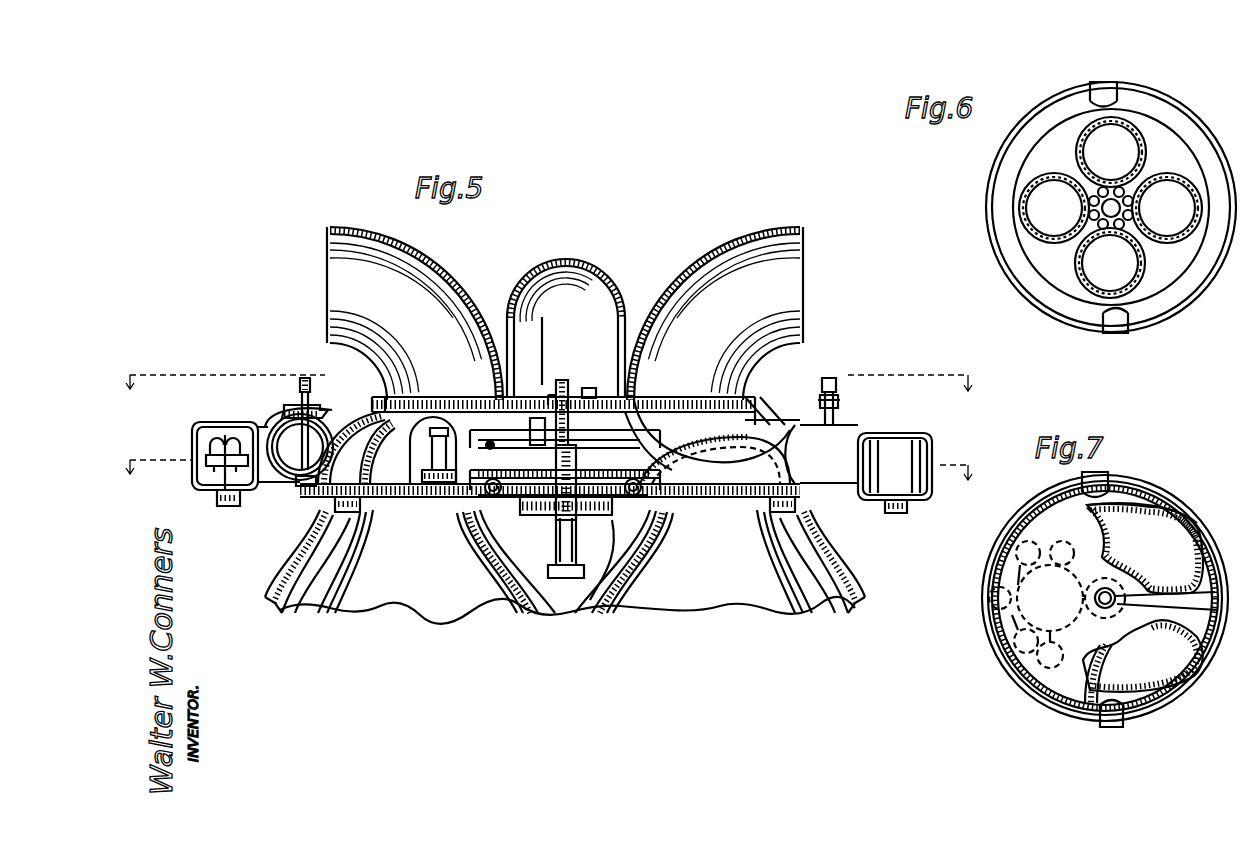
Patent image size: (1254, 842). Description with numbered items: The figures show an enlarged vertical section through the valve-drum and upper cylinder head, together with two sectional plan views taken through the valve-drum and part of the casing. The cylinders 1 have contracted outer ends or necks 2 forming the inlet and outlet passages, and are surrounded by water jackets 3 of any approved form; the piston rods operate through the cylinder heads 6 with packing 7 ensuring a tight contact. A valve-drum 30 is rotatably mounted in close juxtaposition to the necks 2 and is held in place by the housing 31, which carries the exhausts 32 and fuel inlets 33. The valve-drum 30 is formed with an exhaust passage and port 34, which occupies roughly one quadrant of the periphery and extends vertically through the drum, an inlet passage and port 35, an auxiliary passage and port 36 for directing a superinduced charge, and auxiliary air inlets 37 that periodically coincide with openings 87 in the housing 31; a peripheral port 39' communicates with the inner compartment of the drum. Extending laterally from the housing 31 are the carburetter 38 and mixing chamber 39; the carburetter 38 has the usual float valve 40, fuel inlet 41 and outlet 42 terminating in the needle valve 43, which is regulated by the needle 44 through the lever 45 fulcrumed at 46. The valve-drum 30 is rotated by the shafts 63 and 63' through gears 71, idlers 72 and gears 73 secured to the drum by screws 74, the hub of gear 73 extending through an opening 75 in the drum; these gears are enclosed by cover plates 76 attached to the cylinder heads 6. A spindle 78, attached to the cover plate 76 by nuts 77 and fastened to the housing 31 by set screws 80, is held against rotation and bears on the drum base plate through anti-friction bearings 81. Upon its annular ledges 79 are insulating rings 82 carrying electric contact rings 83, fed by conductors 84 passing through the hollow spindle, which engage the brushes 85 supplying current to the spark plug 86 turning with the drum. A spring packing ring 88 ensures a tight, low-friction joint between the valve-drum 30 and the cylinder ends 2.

In FIG. 5, the cylinders 1 is at (562, 616).
In FIG. 5, the contracted ends or necks 2 is at (565, 561).
In FIG. 5, the water jackets 3 is at (554, 561).
In FIG. 5, the cylinder heads 6 is at (546, 396).
In FIG. 5, the packing 7 is at (546, 480).
In FIG. 5, the valve-drum 30 is at (545, 471).
In FIG. 6, the valve-drum 30 is at (1111, 207).
In FIG. 7, the valve-drum 30 is at (1105, 598).
In FIG. 5, the housing 31 is at (586, 400).
In FIG. 7, the housing 31 is at (1105, 598).
In FIG. 5, the exhausts or outlets 32 is at (557, 313).
In FIG. 6, the exhausts or outlets 32 is at (1118, 208).
In FIG. 5, the fuel inlets 33 is at (566, 313).
In FIG. 6, the fuel inlets 33 is at (1099, 232).
In FIG. 5, the exhaust passage and port 34 is at (363, 448).
In FIG. 7, the exhaust passage and port 34 is at (1154, 547).
In FIG. 5, the inlet passage and port 35 is at (712, 422).
In FIG. 7, the inlet passage and port 35 is at (1159, 656).
In FIG. 5, the auxiliary passage and port 36 is at (715, 480).
In FIG. 7, the auxiliary passage and port 36 is at (1076, 691).
In FIG. 5, the auxiliary air inlets 37 is at (539, 431).
In FIG. 5, the carburetter 38 is at (549, 477).
In FIG. 5, the mixing chamber 39 is at (541, 454).
In FIG. 6, the mixing chamber 39 is at (1109, 207).
In FIG. 7, the mixing chamber 39 is at (1110, 602).
In FIG. 7, the port 39' is at (1144, 497).
In FIG. 5, the float valve 40 is at (199, 457).
In FIG. 5, the fuel inlet 41 is at (546, 517).
In FIG. 5, the outlet 42 is at (285, 466).
In FIG. 5, the needle valve 43 is at (289, 499).
In FIG. 5, the needle 44 is at (316, 402).
In FIG. 5, the lever 45 is at (566, 408).
In FIG. 5, the fulcrum 46 is at (843, 396).
In FIG. 7, the shaft 63 is at (1014, 575).
In FIG. 7, the shaft 63' is at (1062, 553).
In FIG. 7, the gears 71 is at (1025, 634).
In FIG. 7, the idlers 72 is at (1050, 649).
In FIG. 5, the gears 73 is at (565, 561).
In FIG. 7, the gears 73 is at (1135, 598).
In FIG. 5, the screws 74 is at (624, 560).
In FIG. 5, the opening 75 is at (565, 468).
In FIG. 7, the opening 75 is at (1169, 598).
In FIG. 5, the cover plates 76 is at (556, 562).
In FIG. 5, the nuts 77 is at (565, 577).
In FIG. 5, the spindle 78 is at (580, 471).
In FIG. 5, the ledges or shelves 79 is at (518, 503).
In FIG. 5, the set screws 80 is at (590, 364).
In FIG. 5, the anti-friction bearings 81 is at (572, 474).
In FIG. 5, the rings 82 is at (659, 441).
In FIG. 5, the electric contact rings 83 is at (565, 434).
In FIG. 5, the electric conductors 84 is at (549, 354).
In FIG. 5, the brushes 85 is at (433, 431).
In FIG. 5, the spark plug 86 is at (414, 458).
In FIG. 5, the openings 87 is at (557, 395).
In FIG. 6, the openings 87 is at (1085, 227).
In FIG. 5, the spring packing ring 88 is at (565, 524).